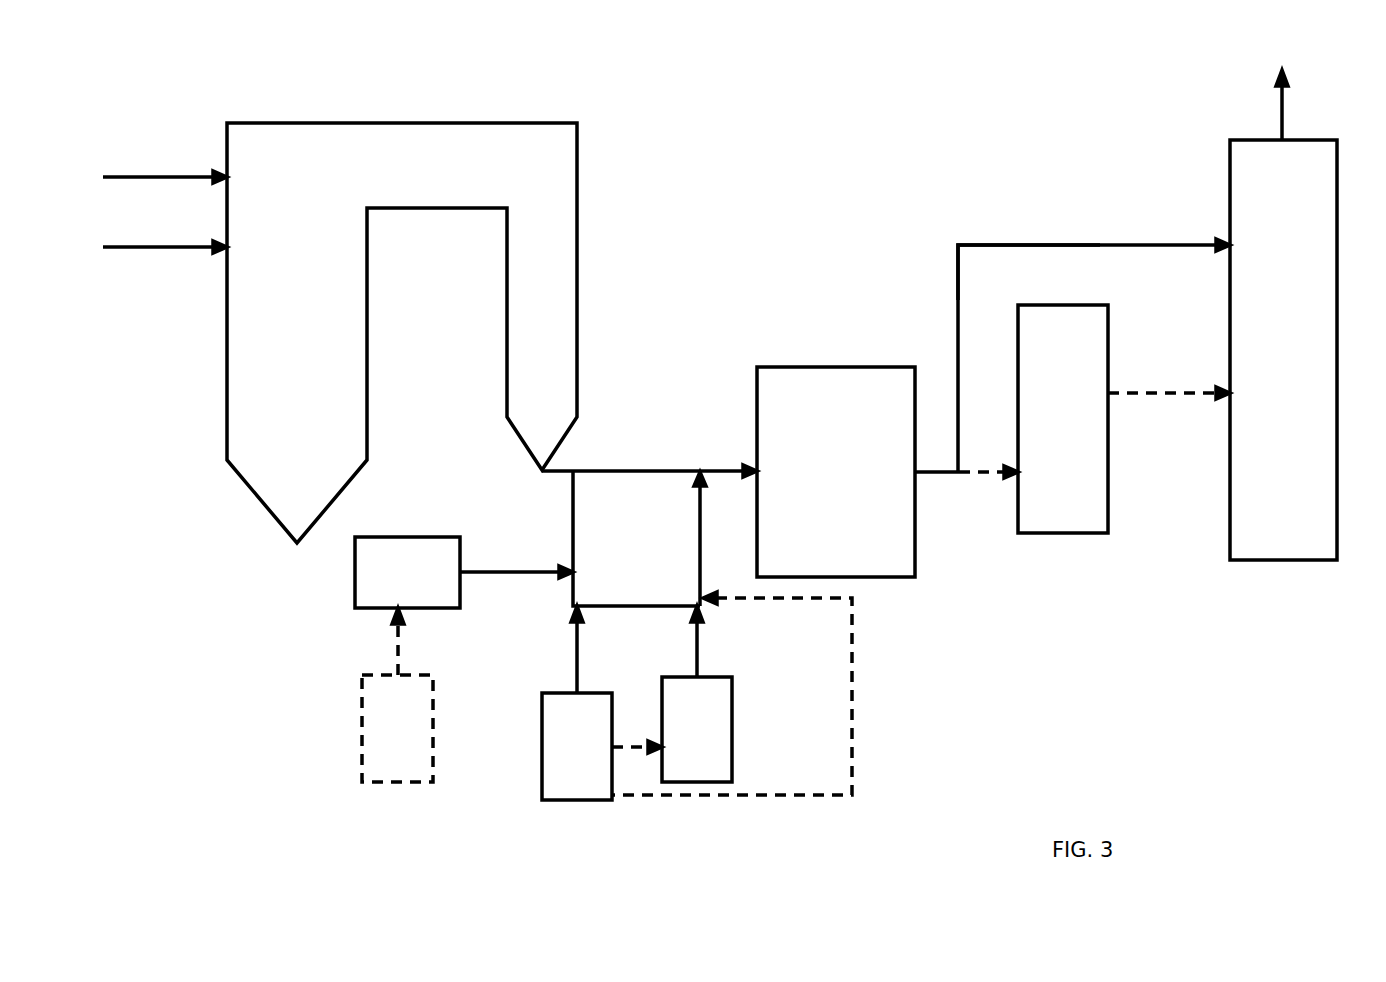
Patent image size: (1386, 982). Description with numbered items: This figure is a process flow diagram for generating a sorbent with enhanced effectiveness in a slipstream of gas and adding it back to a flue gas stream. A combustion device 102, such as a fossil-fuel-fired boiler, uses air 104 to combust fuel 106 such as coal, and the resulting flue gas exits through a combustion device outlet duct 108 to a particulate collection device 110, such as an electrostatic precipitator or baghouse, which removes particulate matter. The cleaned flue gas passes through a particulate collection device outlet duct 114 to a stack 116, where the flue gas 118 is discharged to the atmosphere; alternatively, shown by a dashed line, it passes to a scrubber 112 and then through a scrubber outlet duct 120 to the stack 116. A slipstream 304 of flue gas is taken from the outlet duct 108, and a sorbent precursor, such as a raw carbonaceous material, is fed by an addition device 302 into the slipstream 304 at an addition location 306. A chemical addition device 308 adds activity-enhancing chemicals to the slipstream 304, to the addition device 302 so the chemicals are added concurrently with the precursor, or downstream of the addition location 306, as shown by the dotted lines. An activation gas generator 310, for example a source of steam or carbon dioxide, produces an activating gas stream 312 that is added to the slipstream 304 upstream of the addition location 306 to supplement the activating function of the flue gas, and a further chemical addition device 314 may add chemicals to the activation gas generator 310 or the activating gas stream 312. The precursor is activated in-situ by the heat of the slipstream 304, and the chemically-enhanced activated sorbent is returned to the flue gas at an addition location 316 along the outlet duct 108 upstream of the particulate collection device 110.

The combustion device 102 is at (400, 123).
The air 104 is at (183, 177).
The fuel 106 is at (183, 247).
The combustion device outlet duct 108 is at (580, 471).
The particulate collection device 110 is at (808, 367).
The scrubber 112 is at (1028, 535).
The particulate collection device outlet duct 114 is at (1073, 245).
The stack 116 is at (1230, 175).
The flue gas 118 is at (1283, 120).
The scrubber outlet duct 120 is at (1133, 393).
The addition device 302 is at (732, 772).
The slipstream 304 is at (573, 518).
The addition location 306 is at (698, 604).
The chemical addition device 308 is at (555, 800).
The activation gas generator 310 is at (355, 585).
The activating gas stream 312 is at (540, 572).
The chemical addition device 314 is at (375, 782).
The addition location 316 is at (700, 471).